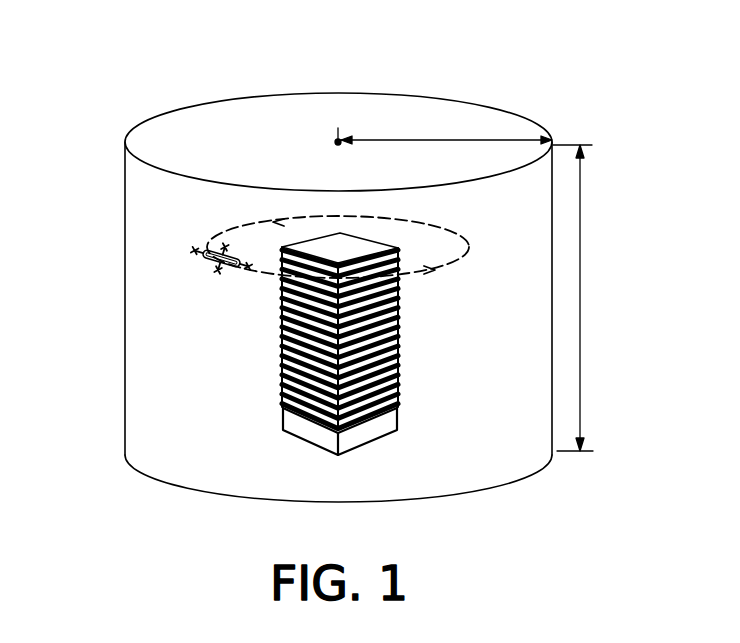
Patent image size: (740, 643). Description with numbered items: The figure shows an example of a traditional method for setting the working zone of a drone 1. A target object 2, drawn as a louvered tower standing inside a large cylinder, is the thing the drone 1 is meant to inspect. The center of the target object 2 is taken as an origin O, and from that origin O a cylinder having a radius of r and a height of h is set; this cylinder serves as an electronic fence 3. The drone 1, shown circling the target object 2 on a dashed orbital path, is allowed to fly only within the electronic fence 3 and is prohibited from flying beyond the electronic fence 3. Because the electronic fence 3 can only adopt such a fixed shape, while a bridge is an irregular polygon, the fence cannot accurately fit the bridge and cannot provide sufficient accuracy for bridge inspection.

The drone 1 is at (215, 263).
The target object 2 is at (320, 245).
The electronic fence 3 is at (517, 115).
The origin O is at (338, 143).
The radius r is at (446, 124).
The height h is at (580, 298).